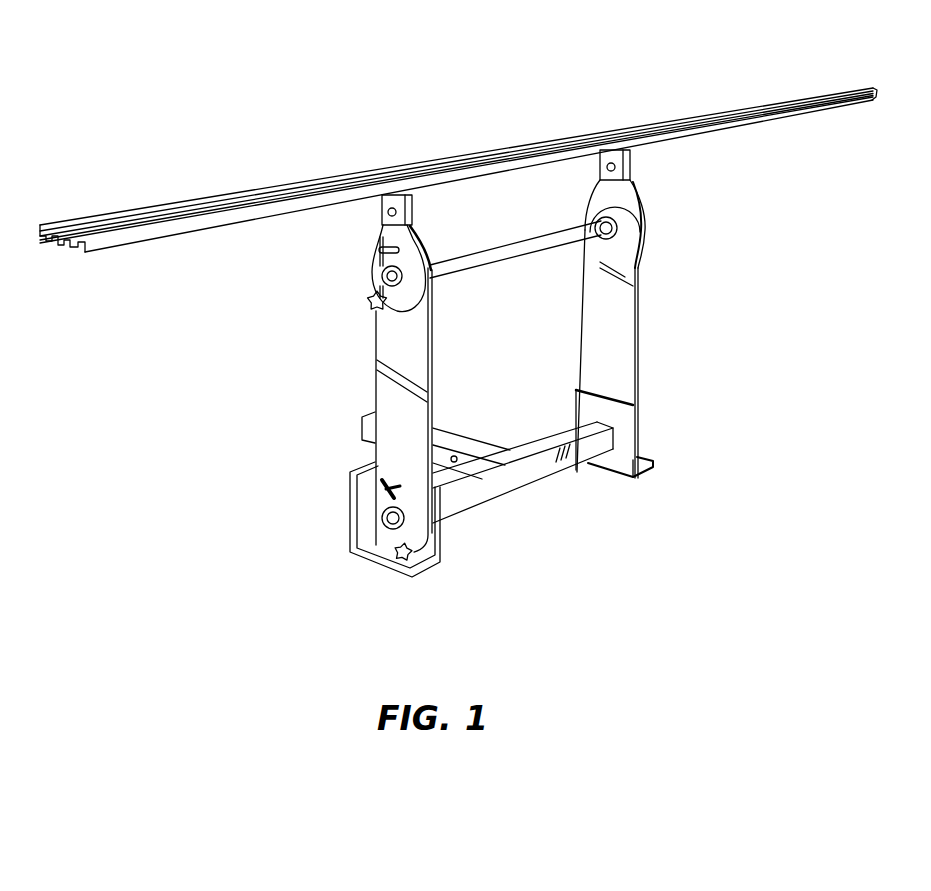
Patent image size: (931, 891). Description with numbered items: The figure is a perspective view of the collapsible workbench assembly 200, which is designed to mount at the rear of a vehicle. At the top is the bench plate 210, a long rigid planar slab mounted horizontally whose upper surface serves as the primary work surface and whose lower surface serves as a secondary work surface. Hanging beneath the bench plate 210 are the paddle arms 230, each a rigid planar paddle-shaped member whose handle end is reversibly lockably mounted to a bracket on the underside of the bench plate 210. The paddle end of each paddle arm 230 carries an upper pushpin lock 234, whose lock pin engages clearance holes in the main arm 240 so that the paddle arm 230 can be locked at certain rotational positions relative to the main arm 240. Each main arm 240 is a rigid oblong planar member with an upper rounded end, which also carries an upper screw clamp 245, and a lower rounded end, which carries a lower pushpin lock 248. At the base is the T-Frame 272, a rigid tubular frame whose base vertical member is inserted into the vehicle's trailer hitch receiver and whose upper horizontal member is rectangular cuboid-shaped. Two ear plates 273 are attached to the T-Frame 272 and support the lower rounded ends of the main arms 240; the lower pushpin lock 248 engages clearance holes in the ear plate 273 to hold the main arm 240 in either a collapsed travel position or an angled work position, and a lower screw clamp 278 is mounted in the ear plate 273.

The collapsible workbench assembly 200 is at (160, 497).
The bench plate 210 is at (222, 200).
The paddle arm 230 is at (370, 268).
The upper pushpin lock 234 is at (372, 258).
The main arm 240 is at (378, 364).
The upper screw clamp 245 is at (367, 308).
The lower pushpin lock 248 is at (380, 488).
The T-Frame 272 is at (468, 495).
The ear plate 273 is at (432, 552).
The lower screw clamp 278 is at (385, 553).